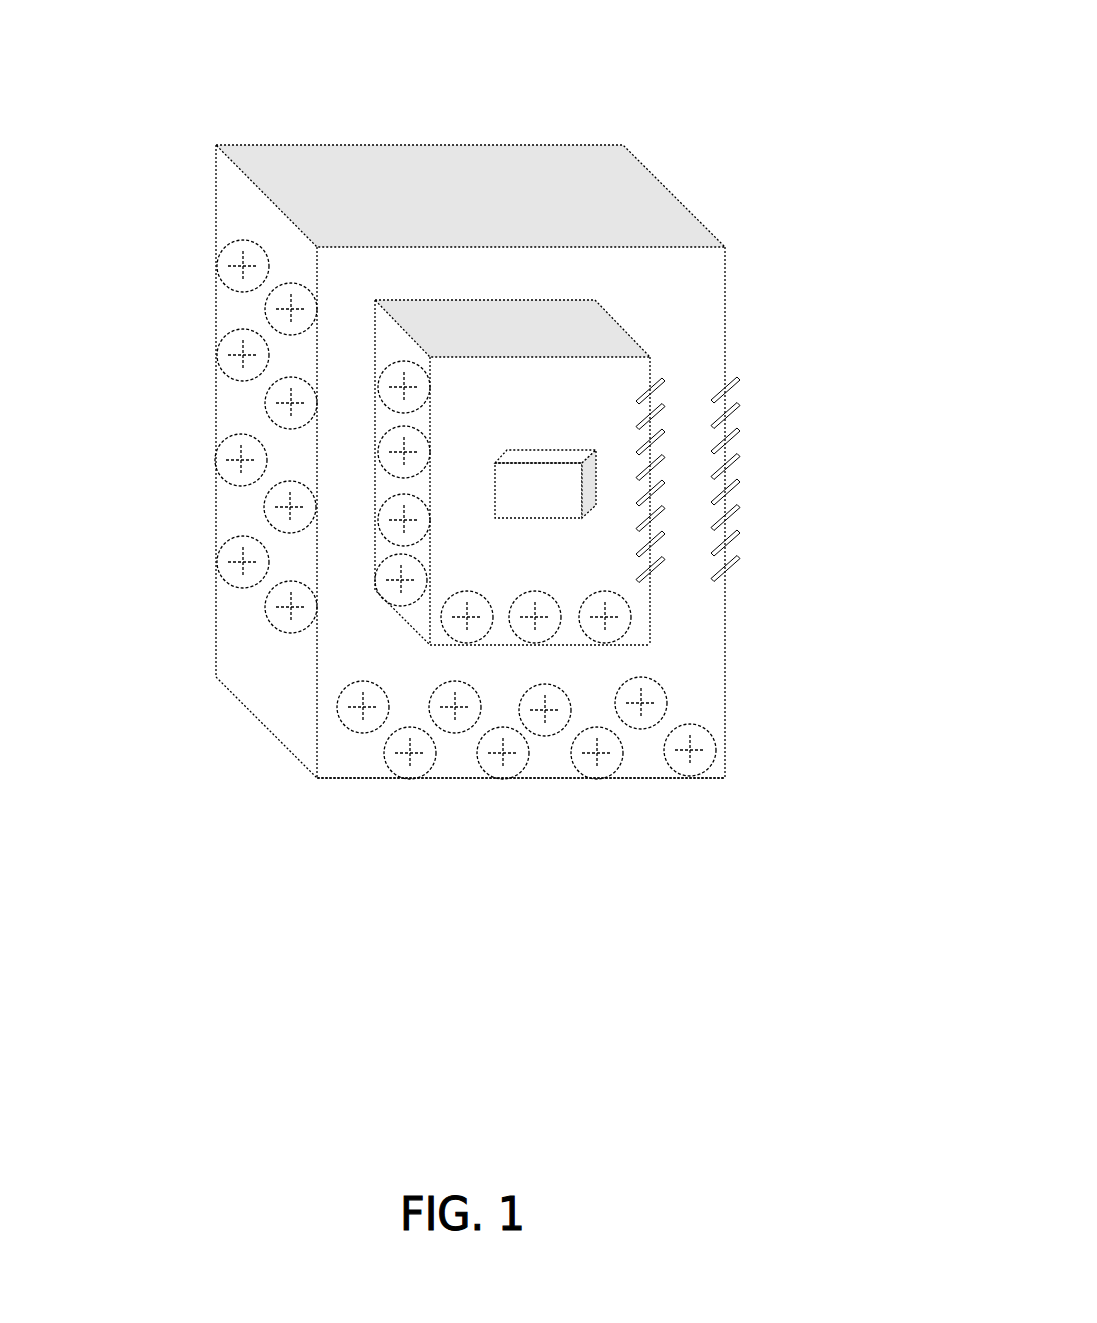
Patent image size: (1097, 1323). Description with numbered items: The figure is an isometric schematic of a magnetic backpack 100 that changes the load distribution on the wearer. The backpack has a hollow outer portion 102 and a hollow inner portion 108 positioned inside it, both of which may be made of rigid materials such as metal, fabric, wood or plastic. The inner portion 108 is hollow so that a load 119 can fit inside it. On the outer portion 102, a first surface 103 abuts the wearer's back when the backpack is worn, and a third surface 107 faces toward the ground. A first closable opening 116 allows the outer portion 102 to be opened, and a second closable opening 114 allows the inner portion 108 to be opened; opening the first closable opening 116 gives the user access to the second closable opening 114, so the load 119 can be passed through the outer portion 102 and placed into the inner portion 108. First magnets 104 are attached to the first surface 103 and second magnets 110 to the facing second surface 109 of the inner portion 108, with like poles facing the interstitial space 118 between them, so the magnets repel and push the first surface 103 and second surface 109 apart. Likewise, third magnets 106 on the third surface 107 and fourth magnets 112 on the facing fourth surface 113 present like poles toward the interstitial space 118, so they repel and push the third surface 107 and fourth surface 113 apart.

The magnetic backpack 100 is at (866, 1133).
The outer portion 102 is at (216, 147).
The first surface 103 is at (216, 212).
The first magnets 104 is at (232, 332).
The third magnets 106 is at (392, 763).
The third surface 107 is at (628, 780).
The inner portion 108 is at (405, 322).
The second surface 109 is at (430, 415).
The second magnets 110 is at (433, 357).
The fourth magnets 112 is at (622, 634).
The fourth surface 113 is at (618, 647).
The second closable opening 114 is at (640, 405).
The first closable opening 116 is at (718, 400).
The interstitial space 118 is at (350, 634).
The load 119 is at (596, 490).